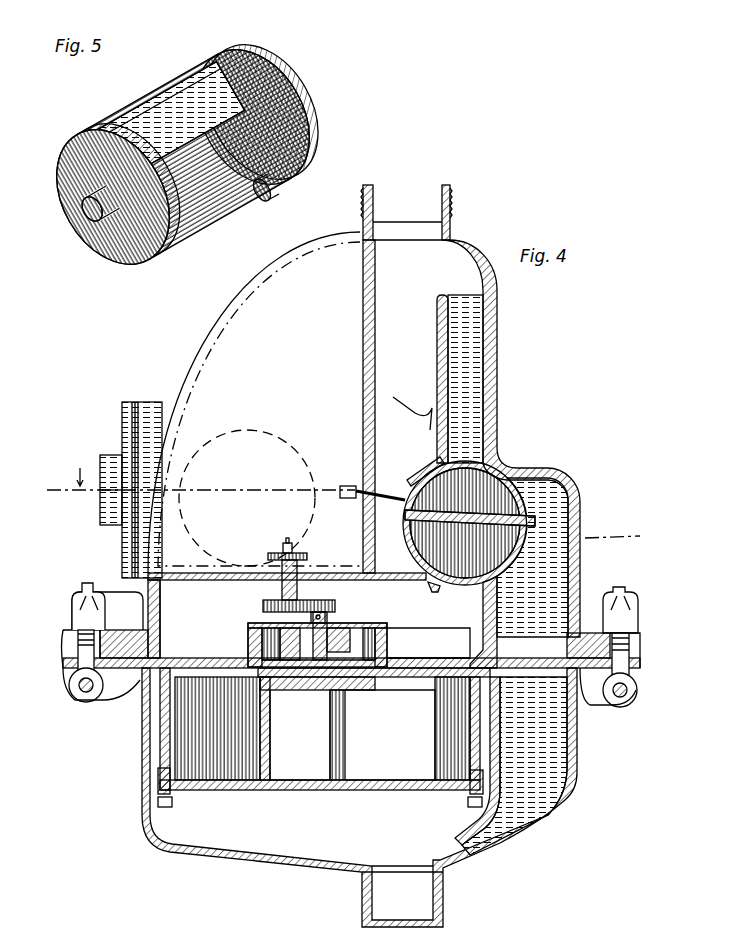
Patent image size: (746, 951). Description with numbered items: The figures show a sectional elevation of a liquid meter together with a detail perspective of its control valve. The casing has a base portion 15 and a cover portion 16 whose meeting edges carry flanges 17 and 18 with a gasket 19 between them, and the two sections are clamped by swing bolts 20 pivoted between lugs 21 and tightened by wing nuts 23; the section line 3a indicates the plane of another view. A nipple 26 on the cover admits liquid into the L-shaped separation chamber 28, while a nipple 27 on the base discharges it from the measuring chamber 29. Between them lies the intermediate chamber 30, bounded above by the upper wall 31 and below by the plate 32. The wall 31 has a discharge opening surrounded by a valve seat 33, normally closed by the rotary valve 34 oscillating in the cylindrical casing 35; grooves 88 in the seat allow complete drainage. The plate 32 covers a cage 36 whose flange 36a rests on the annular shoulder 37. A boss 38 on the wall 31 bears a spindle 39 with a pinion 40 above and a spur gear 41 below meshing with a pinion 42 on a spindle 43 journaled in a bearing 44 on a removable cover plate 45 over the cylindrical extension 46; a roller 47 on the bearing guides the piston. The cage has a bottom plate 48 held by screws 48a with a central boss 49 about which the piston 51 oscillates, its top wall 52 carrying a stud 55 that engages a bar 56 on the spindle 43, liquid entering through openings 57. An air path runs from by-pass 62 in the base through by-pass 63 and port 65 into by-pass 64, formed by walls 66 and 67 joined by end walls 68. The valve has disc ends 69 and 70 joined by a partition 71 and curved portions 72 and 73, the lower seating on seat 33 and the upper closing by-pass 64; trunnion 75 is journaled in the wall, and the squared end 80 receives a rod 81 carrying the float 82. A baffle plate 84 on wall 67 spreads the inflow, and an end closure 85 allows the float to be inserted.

In FIG. 4, the base portion 15 is at (142, 797).
In FIG. 4, the cover portion 16 is at (192, 350).
In FIG. 4, the flange 17 is at (590, 707).
In FIG. 4, the flange 18 is at (118, 628).
In FIG. 4, the gasket 19 is at (568, 656).
In FIG. 4, the swing bolt 20 is at (72, 660).
In FIG. 4, the lug 21 is at (98, 702).
In FIG. 4, the wing nut 23 is at (72, 602).
In FIG. 4, the nipple 26 is at (450, 196).
In FIG. 4, the nipple 27 is at (444, 898).
In FIG. 4, the separation chamber 28 is at (471, 438).
In FIG. 4, the measuring chamber 29 is at (381, 820).
In FIG. 4, the intermediate chamber 30 is at (405, 594).
In FIG. 4, the upper wall 31 is at (202, 580).
In FIG. 4, the plate 32 is at (198, 648).
In FIG. 4, the valve seat 33 is at (440, 598).
In FIG. 5, the rotary valve 34 is at (193, 155).
In FIG. 4, the rotary valve 34 is at (469, 523).
In FIG. 4, the cylindrical casing 35 is at (580, 574).
In FIG. 4, the cage 36 is at (160, 744).
In FIG. 4, the flange 36a is at (170, 619).
In FIG. 4, the annular shoulder 37 is at (150, 690).
In FIG. 4, the boss 38 is at (282, 588).
In FIG. 4, the spindle 39 is at (298, 576).
In FIG. 4, the pinion 40 is at (280, 552).
In FIG. 4, the spur gear 41 is at (263, 606).
In FIG. 4, the pinion 42 is at (335, 600).
In FIG. 4, the spindle 43 is at (330, 628).
In FIG. 4, the bearing 44 is at (390, 640).
In FIG. 4, the cover plate 45 is at (396, 632).
In FIG. 4, the cylindrical extension 46 is at (248, 640).
In FIG. 4, the roller 47 is at (217, 726).
In FIG. 4, the bottom plate 48 is at (214, 790).
In FIG. 4, the screw 48a is at (162, 806).
In FIG. 4, the boss 49 is at (270, 742).
In FIG. 4, the piston 51 is at (237, 740).
In FIG. 4, the top wall 52 is at (296, 690).
In FIG. 4, the stud 55 is at (392, 658).
In FIG. 4, the bar 56 is at (336, 700).
In FIG. 4, the opening 57 is at (422, 680).
In FIG. 4, the by-pass 62 is at (560, 760).
In FIG. 4, the by-pass 63 is at (568, 555).
In FIG. 4, the by-pass 64 is at (470, 392).
In FIG. 4, the port 65 is at (552, 482).
In FIG. 4, the wall 66 is at (498, 352).
In FIG. 4, the wall 67 is at (437, 336).
In FIG. 4, the end wall 68 is at (466, 297).
In FIG. 5, the end portion 69 is at (284, 104).
In FIG. 4, the end portion 69 is at (476, 470).
In FIG. 5, the end portion 70 is at (141, 250).
In FIG. 5, the partition 71 is at (252, 202).
In FIG. 4, the partition 71 is at (522, 500).
In FIG. 4, the upper valve portion 72 is at (408, 486).
In FIG. 5, the lower valve portion 73 is at (146, 102).
In FIG. 4, the lower valve portion 73 is at (391, 554).
In FIG. 5, the trunnion 75 is at (97, 222).
In FIG. 4, the squared end 80 is at (462, 508).
In FIG. 4, the rod 81 is at (365, 484).
In FIG. 4, the float 82 is at (278, 446).
In FIG. 4, the baffle plate 84 is at (398, 396).
In FIG. 4, the end closure 85 is at (122, 416).
In FIG. 4, the groove 88 is at (440, 590).
In FIG. 4, the section line 3a is at (353, 510).